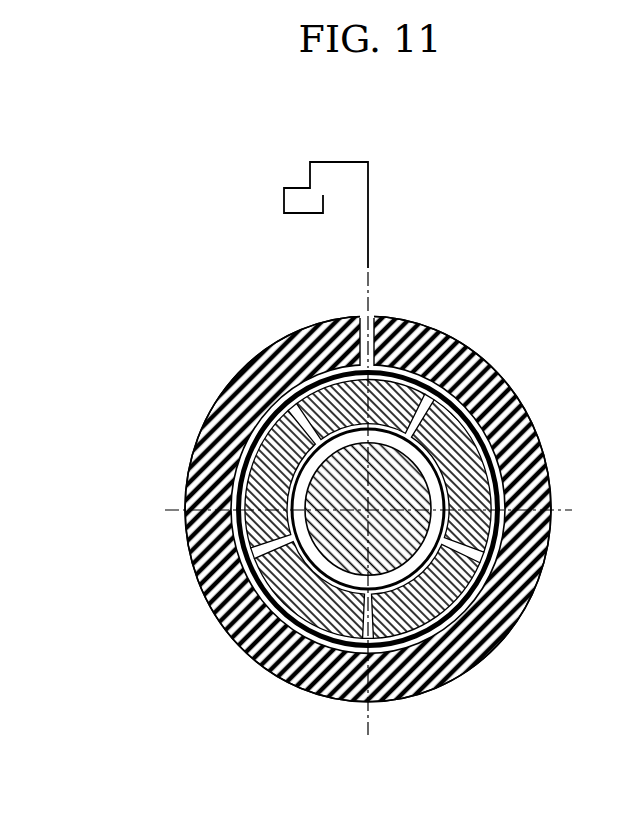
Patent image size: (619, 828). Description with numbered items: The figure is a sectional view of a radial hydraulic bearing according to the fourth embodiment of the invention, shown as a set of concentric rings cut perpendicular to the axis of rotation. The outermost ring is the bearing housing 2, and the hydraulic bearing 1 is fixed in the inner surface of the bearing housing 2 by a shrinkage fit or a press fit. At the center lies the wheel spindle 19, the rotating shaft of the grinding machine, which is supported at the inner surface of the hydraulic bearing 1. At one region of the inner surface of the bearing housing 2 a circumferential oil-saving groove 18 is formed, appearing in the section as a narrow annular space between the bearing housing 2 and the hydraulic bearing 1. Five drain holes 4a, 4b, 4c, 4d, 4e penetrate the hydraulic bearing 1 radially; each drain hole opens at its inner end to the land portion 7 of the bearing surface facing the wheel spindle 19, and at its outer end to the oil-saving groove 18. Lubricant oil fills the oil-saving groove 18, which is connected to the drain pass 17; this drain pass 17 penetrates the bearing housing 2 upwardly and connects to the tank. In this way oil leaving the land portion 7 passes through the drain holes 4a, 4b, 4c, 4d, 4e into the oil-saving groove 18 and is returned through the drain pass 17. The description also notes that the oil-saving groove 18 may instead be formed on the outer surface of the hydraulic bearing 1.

The hydraulic bearing 1 is at (515, 463).
The bearing housing 2 is at (210, 420).
The drain hole 4a is at (297, 410).
The drain hole 4b is at (280, 543).
The drain hole 4c is at (362, 642).
The drain hole 4d is at (480, 555).
The drain hole 4e is at (423, 420).
The land portion 7 is at (245, 555).
The drain pass 17 is at (378, 318).
The oil-saving groove 18 is at (323, 377).
The wheel spindle 19 is at (420, 392).